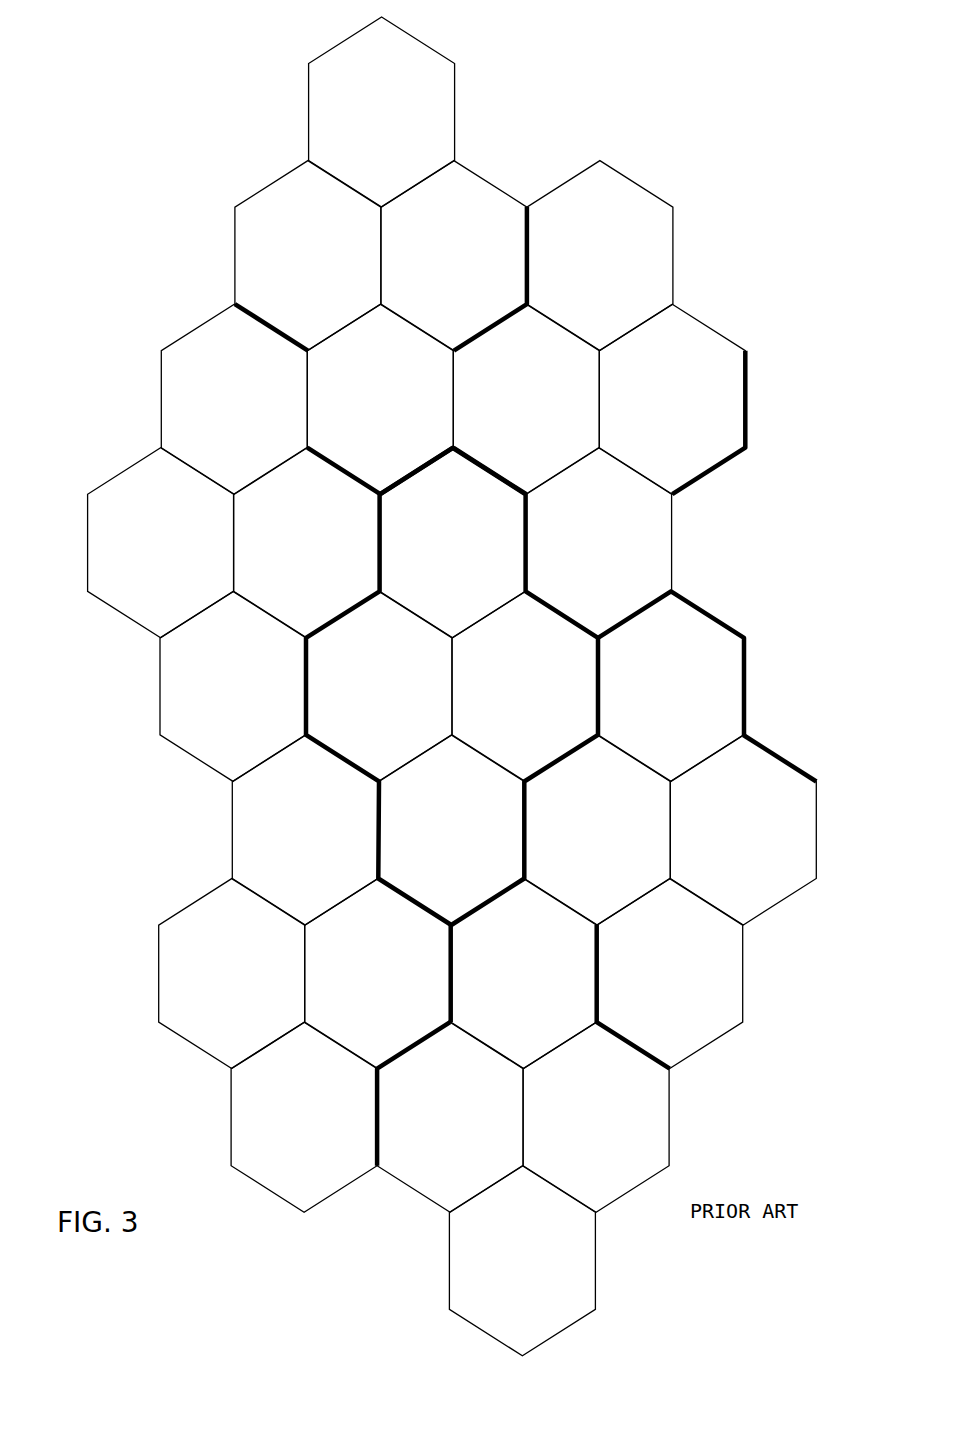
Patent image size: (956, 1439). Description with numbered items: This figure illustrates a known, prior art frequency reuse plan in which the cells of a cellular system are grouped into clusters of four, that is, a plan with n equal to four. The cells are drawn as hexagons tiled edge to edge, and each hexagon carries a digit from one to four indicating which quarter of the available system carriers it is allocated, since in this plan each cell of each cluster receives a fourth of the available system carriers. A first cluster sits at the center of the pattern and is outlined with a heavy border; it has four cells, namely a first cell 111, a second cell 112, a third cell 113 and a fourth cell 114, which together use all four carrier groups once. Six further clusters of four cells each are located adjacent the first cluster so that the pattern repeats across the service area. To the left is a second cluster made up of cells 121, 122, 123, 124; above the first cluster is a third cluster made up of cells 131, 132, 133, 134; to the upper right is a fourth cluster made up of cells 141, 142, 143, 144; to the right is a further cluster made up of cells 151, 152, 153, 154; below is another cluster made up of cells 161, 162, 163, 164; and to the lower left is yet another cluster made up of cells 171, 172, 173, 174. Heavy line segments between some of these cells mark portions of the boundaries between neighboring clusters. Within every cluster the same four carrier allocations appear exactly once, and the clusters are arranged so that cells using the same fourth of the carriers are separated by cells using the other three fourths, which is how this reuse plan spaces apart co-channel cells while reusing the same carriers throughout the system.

The cell 111 is at (362, 772).
The cell 112 is at (470, 629).
The cell 113 is at (434, 916).
The cell 114 is at (508, 772).
The cell 121 is at (178, 629).
The cell 122 is at (217, 485).
The cell 123 is at (216, 772).
The cell 124 is at (324, 629).
The cell 131 is at (325, 342).
The cell 132 is at (399, 198).
The cell 133 is at (363, 485).
The cell 134 is at (471, 342).
The cell 141 is at (509, 485).
The cell 142 is at (617, 342).
The cell 143 is at (616, 629).
The cell 144 is at (655, 485).
The cell 151 is at (580, 916).
The cell 152 is at (654, 772).
The cell 153 is at (687, 1060).
The cell 154 is at (726, 916).
The cell 161 is at (433, 1203).
The cell 162 is at (541, 1060).
The cell 163 is at (505, 1347).
The cell 164 is at (579, 1203).
The cell 171 is at (249, 1060).
The cell 172 is at (288, 916).
The cell 173 is at (287, 1203).
The cell 174 is at (395, 1060).